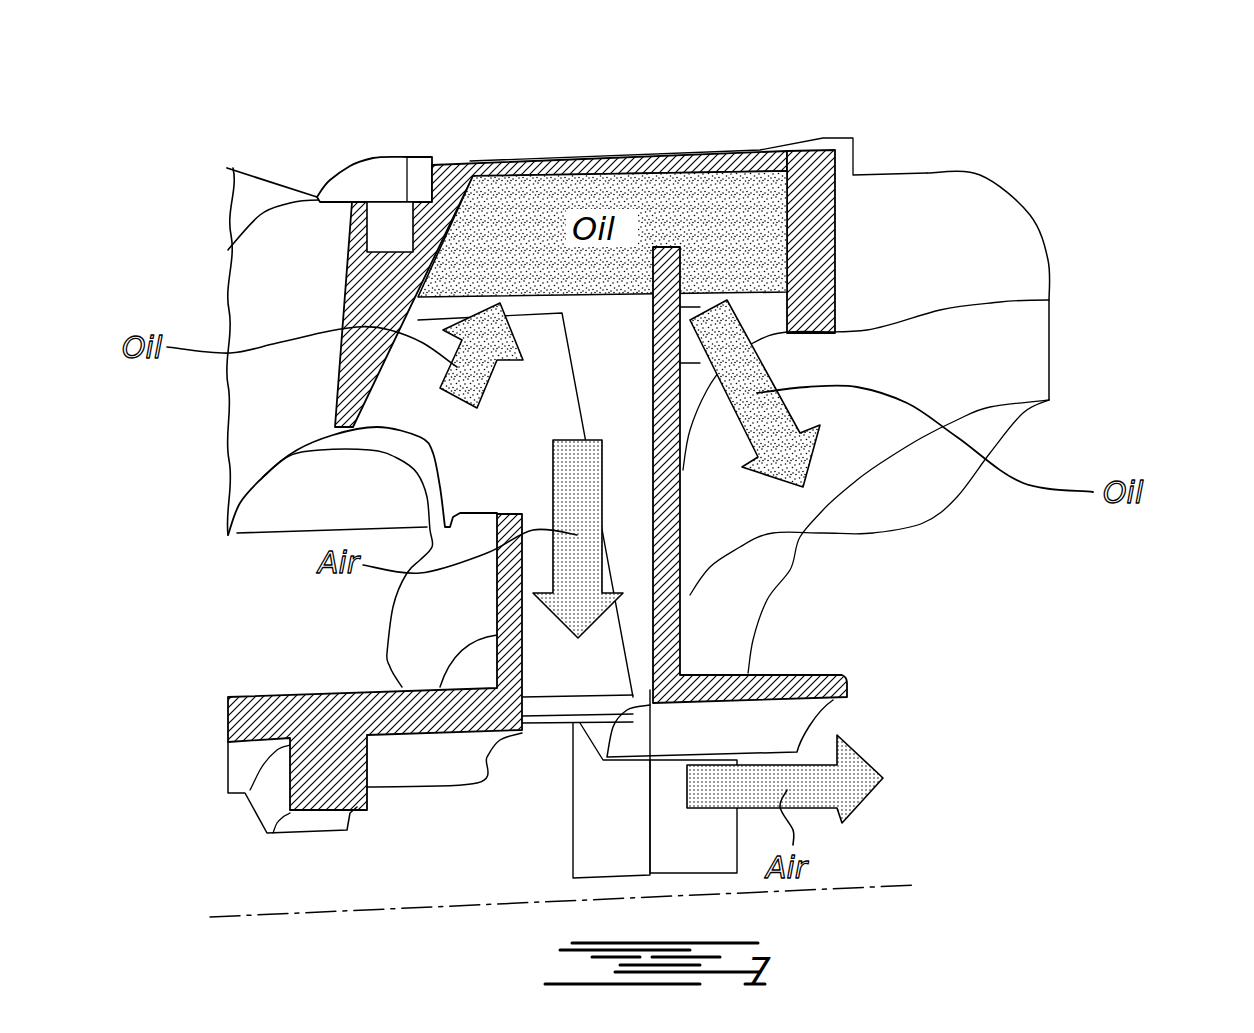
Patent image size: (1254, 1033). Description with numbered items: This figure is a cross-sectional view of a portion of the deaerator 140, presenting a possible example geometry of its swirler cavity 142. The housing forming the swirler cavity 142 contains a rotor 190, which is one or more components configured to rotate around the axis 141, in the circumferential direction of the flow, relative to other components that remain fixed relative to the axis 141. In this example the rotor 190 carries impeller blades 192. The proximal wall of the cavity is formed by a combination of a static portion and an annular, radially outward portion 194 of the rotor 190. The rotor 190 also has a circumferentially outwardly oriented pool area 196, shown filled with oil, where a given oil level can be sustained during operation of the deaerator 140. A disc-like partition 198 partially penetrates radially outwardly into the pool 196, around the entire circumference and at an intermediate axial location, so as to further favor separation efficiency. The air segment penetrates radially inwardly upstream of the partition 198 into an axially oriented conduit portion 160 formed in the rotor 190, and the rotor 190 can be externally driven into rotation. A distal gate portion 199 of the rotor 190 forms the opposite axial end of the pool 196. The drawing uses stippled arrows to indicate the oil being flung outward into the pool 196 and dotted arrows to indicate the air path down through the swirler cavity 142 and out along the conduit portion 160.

The deaerator 140 is at (1110, 180).
The axis 141 is at (288, 913).
The swirler cavity 142 is at (307, 620).
The axially oriented conduit portion 160 is at (853, 785).
The rotor 190 is at (683, 547).
The impeller blades 192 is at (423, 423).
The radially outward portion of the rotor 194 is at (320, 287).
The pool area 196 is at (613, 172).
The disc-like partition 198 is at (537, 318).
The gate portion 199 is at (837, 217).